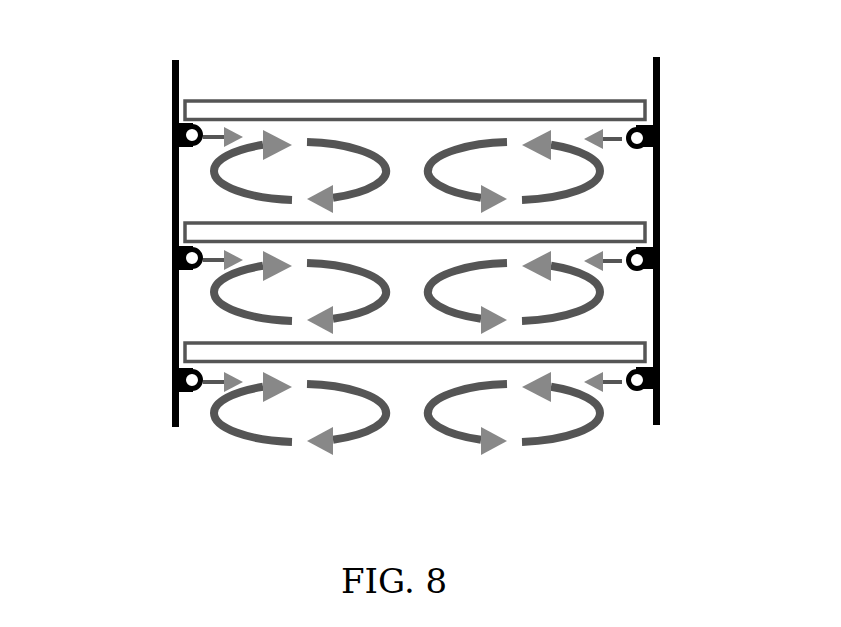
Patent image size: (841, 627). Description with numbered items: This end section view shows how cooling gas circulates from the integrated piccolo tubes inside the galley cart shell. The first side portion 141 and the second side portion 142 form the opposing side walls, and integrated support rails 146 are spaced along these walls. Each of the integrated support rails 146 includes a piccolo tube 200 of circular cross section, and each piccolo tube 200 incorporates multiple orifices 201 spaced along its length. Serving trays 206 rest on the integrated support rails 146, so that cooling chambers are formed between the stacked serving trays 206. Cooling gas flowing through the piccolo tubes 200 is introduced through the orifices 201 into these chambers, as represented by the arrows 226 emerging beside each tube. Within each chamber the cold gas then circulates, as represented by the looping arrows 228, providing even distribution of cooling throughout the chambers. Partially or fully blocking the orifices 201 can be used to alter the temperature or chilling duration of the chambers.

The first side portion 141 is at (660, 76).
The second side portion 142 is at (172, 100).
The integrated support rails 146 is at (660, 121).
The piccolo tubes 200 is at (190, 147).
The orifices 201 is at (203, 146).
The serving trays 206 is at (477, 101).
The arrows representing cooling gas flow 226 is at (222, 133).
The arrows representing cold gas circulation 228 is at (360, 145).